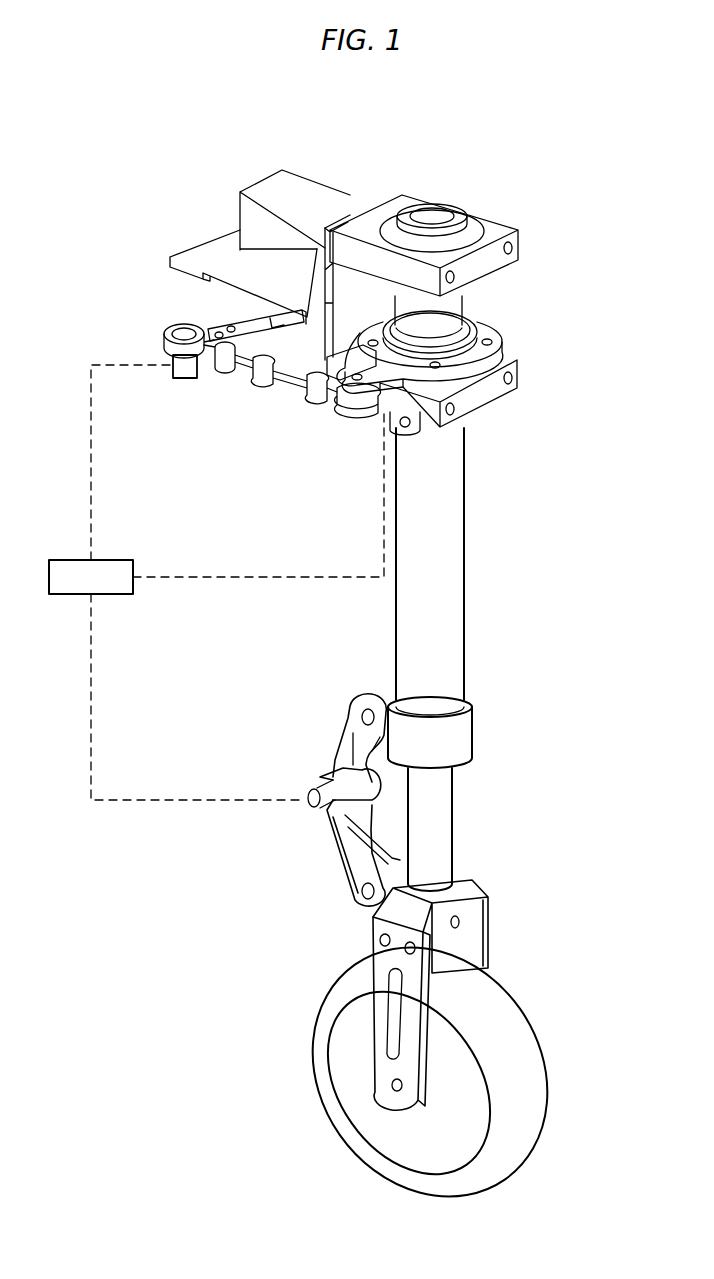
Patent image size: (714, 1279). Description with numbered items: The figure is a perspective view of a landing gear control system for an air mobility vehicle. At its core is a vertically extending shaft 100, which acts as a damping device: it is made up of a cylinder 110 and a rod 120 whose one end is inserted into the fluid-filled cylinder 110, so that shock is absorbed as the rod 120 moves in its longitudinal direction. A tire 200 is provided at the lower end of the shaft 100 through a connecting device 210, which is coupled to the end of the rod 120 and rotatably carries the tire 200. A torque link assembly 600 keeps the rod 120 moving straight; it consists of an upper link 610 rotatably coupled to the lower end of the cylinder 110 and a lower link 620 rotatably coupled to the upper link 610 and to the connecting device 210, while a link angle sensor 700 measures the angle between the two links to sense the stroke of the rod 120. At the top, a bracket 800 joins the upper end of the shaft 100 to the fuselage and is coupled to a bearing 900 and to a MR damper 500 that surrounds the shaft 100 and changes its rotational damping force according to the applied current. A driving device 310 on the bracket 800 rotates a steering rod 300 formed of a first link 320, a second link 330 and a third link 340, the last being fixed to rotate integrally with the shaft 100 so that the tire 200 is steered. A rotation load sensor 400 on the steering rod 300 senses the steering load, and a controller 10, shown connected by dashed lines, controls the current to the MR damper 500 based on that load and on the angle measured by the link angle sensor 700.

The controller 10 is at (216, 582).
The shaft 100 is at (478, 547).
The cylinder 110 is at (446, 592).
The rod 120 is at (443, 795).
The tire 200 is at (540, 1100).
The connecting device 210 is at (472, 928).
The steering rod 300 is at (166, 322).
The driving device 310 is at (300, 227).
The first link 320 is at (248, 315).
The second link 330 is at (315, 392).
The third link 340 is at (487, 330).
The rotation load sensor 400 is at (185, 368).
The MR damper 500 is at (517, 380).
The torque link assembly 600 is at (402, 813).
The upper link 610 is at (343, 732).
The lower link 620 is at (367, 853).
The link angle sensor 700 is at (316, 790).
The bracket 800 is at (270, 282).
The bearing 900 is at (497, 236).